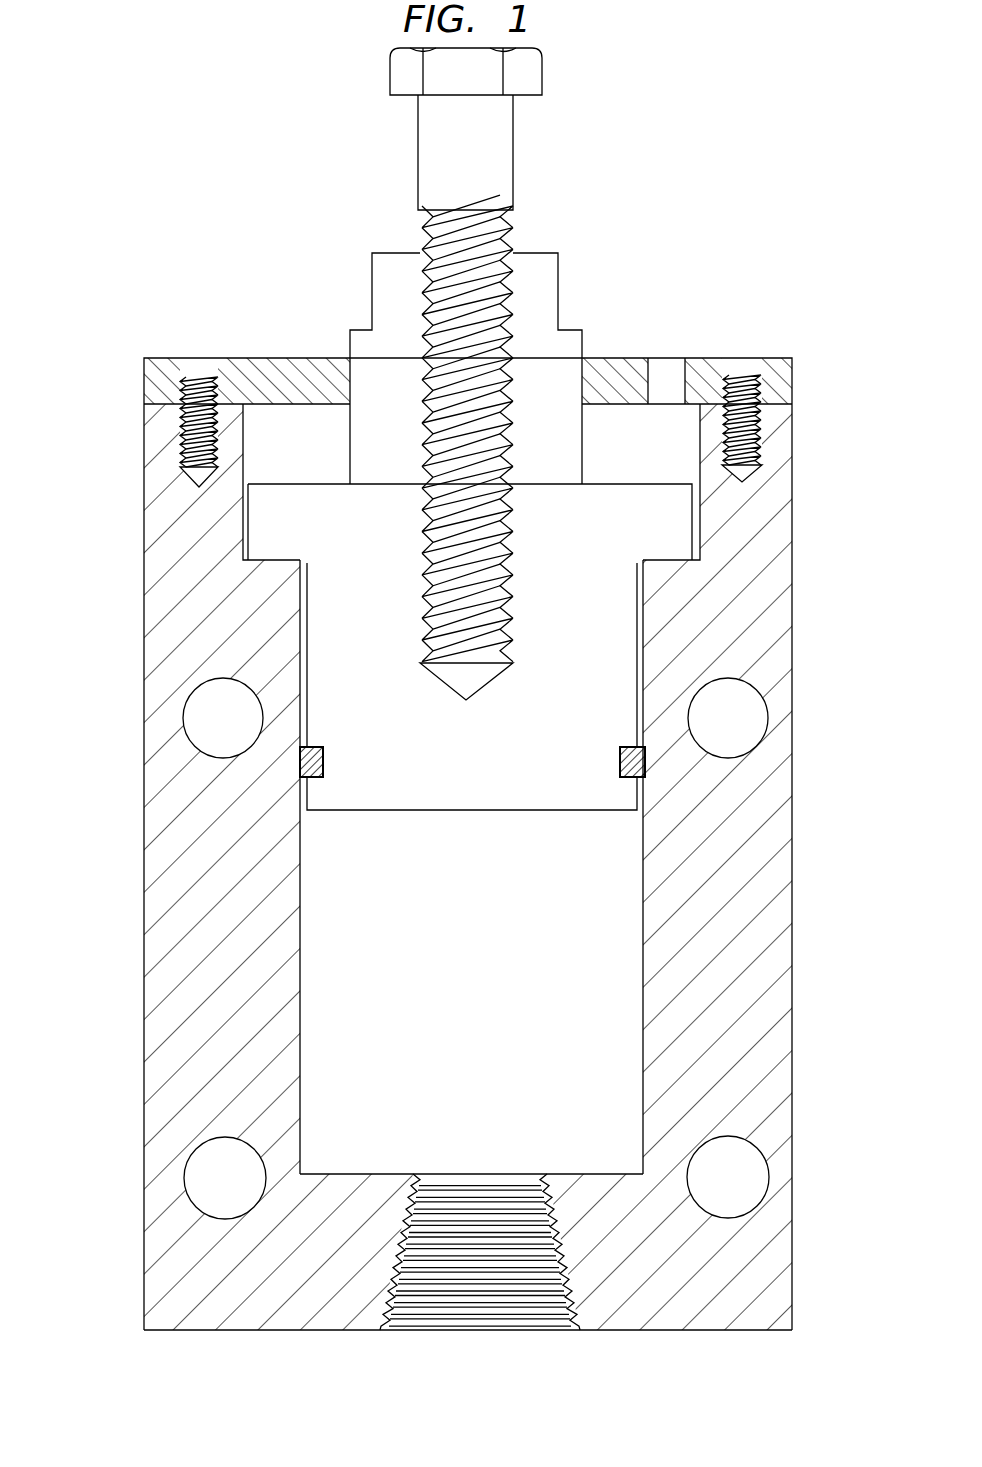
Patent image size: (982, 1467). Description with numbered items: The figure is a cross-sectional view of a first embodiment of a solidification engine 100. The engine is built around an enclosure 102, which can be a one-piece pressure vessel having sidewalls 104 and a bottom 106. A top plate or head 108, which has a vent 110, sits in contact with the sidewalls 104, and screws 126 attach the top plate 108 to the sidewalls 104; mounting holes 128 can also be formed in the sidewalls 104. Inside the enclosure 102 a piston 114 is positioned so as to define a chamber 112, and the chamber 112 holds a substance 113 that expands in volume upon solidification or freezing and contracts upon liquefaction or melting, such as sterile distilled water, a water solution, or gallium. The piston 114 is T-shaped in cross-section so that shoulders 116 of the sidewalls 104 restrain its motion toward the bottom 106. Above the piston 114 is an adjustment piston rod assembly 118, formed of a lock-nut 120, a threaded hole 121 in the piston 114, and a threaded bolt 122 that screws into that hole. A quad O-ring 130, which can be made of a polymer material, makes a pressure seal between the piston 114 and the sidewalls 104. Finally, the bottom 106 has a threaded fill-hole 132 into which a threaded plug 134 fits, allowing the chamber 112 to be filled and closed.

The solidification engine 100 is at (232, 292).
The enclosure 102 is at (148, 1268).
The sidewalls 104 is at (164, 982).
The bottom 106 is at (606, 1310).
The top plate 108 is at (155, 386).
The vent 110 is at (661, 372).
The chamber 112 is at (325, 858).
The substance 113 is at (480, 968).
The piston 114 is at (613, 645).
The shoulders 116 is at (778, 573).
The adjustment piston rod assembly 118 is at (364, 192).
The lock-nut 120 is at (360, 338).
The threaded hole 121 is at (517, 533).
The threaded bolt 122 is at (500, 158).
The screws 126 is at (200, 366).
The mounting holes 128 is at (762, 428).
The quad O-ring 130 is at (645, 758).
The threaded fill-hole 132 is at (392, 1315).
The threaded plug 134 is at (513, 1312).